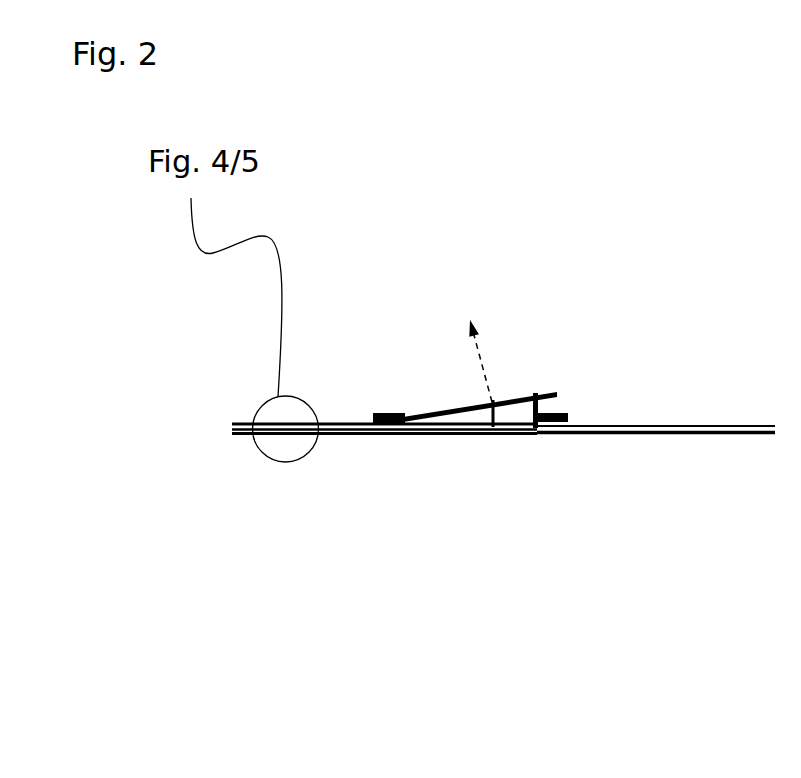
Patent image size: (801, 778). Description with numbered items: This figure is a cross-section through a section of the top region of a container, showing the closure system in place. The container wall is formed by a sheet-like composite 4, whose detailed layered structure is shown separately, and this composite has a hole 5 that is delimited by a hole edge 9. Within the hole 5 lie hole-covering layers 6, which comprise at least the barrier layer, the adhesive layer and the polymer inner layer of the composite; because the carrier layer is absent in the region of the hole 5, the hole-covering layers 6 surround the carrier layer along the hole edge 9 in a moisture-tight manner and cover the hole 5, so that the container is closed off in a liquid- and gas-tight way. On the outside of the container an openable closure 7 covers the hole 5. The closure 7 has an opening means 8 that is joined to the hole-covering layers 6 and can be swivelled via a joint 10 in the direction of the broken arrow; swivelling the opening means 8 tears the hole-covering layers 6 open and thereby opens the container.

The sheet-like composite 4 is at (655, 438).
The hole 5 is at (448, 417).
The hole-covering layers 6 is at (438, 433).
The openable closure 7 is at (430, 415).
The opening means 8 is at (493, 410).
The hole edge 9 is at (407, 433).
The joint 10 is at (405, 412).